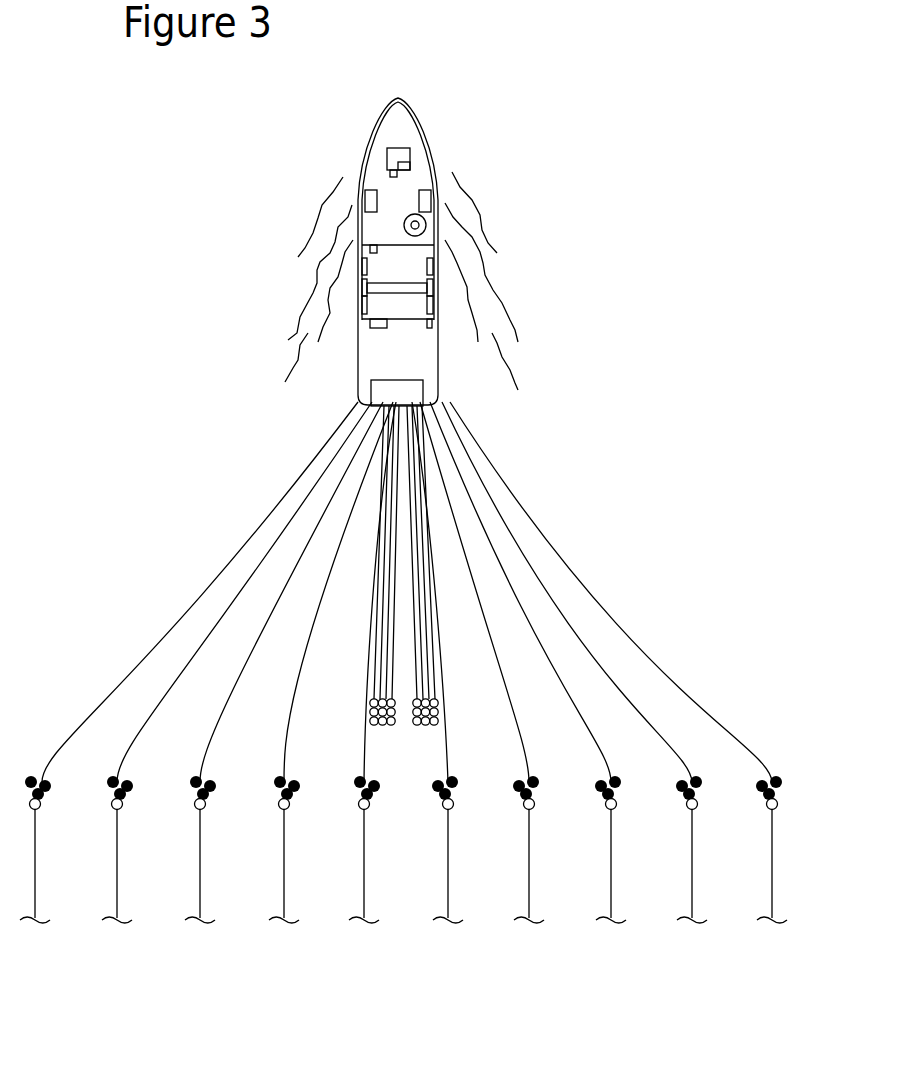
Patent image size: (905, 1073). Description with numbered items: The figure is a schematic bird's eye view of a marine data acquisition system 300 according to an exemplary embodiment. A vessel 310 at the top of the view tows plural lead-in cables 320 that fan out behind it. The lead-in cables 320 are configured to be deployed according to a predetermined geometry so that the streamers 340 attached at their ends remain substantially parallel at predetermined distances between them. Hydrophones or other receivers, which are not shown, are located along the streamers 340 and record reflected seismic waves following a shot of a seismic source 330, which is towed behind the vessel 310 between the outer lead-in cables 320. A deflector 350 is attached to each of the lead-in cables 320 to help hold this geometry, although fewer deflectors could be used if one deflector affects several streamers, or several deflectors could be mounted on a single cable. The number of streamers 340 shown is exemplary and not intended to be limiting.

The marine data acquisition system 300 is at (612, 490).
The vessel 310 is at (362, 141).
The lead-in cables 320 is at (121, 687).
The seismic source 330 is at (397, 700).
The streamers 340 is at (35, 882).
The deflector 350 is at (48, 787).